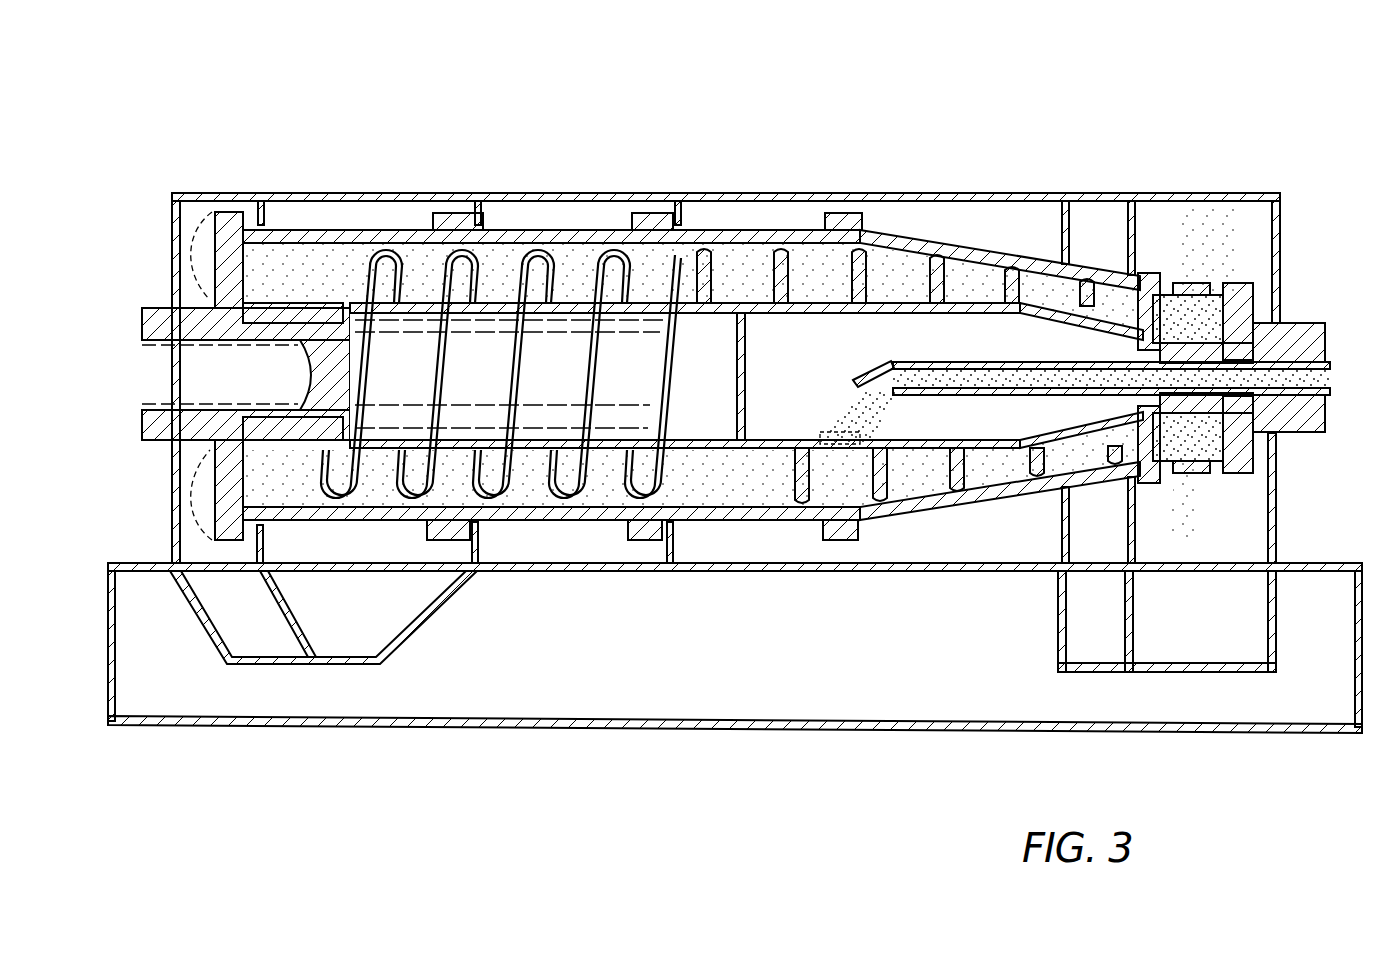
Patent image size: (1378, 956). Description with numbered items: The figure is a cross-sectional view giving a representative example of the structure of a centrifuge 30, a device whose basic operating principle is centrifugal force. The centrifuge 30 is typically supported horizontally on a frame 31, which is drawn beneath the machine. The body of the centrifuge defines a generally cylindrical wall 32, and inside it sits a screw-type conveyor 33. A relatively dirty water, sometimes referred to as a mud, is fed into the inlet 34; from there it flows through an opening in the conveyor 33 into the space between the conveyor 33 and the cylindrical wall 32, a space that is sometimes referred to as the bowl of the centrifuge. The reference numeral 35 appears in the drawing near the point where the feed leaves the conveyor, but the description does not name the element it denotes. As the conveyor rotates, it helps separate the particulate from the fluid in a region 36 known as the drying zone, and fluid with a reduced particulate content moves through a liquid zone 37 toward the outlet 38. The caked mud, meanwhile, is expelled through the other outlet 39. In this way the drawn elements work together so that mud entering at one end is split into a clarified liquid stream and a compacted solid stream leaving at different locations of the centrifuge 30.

The centrifuge 30 is at (1044, 126).
The frame 31 is at (578, 734).
The cylindrical wall 32 is at (742, 520).
The screw-type conveyor 33 is at (712, 338).
The inlet 34 is at (1326, 378).
The feed inlet 35 is at (853, 442).
The drying zone 36 is at (900, 272).
The liquid zone 37 is at (498, 265).
The outlet 38 is at (230, 262).
The outlet 39 is at (1188, 470).